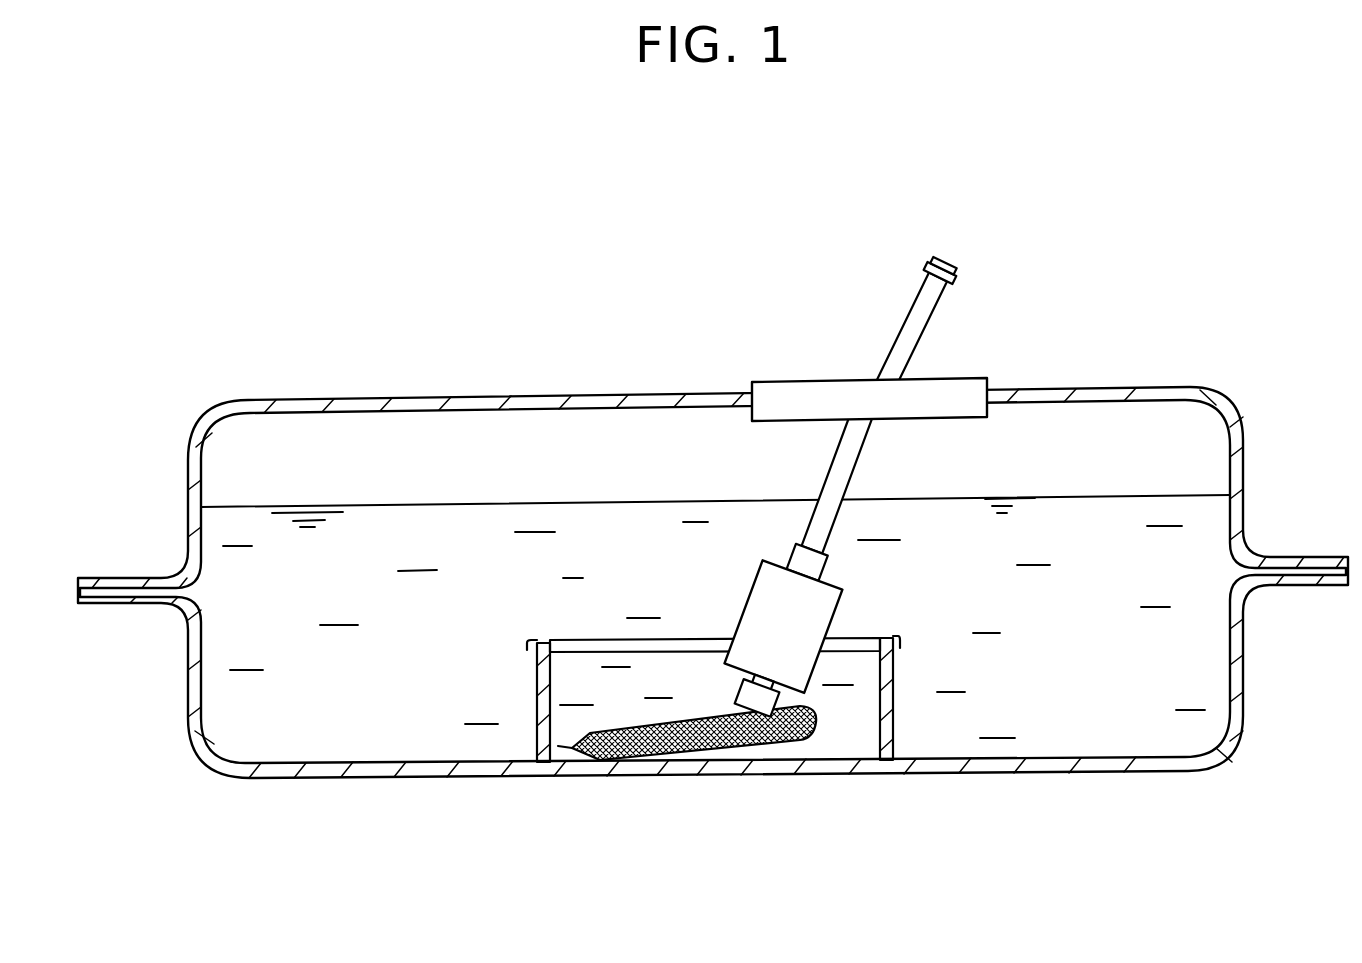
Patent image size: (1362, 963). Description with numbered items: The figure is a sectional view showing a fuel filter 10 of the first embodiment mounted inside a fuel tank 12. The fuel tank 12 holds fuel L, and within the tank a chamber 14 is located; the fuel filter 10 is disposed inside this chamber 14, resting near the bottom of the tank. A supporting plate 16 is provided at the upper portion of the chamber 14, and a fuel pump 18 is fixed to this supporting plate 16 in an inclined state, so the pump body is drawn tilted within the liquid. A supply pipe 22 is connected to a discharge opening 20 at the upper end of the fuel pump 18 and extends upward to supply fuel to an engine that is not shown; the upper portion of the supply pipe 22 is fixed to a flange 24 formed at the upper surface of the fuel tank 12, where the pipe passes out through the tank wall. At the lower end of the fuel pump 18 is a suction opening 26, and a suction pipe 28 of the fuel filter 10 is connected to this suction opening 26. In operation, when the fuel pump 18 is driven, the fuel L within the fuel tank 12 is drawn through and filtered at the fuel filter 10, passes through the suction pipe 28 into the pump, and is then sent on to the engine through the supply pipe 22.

The fuel filter 10 is at (800, 743).
The fuel tank 12 is at (1222, 402).
The chamber 14 is at (892, 672).
The supporting plate 16 is at (857, 638).
The fuel pump 18 is at (758, 589).
The discharge opening 20 is at (818, 566).
The supply pipe 22 is at (838, 462).
The flange 24 is at (952, 378).
The suction opening 26 is at (752, 668).
The suction pipe 28 is at (737, 692).
The fuel L is at (1145, 678).